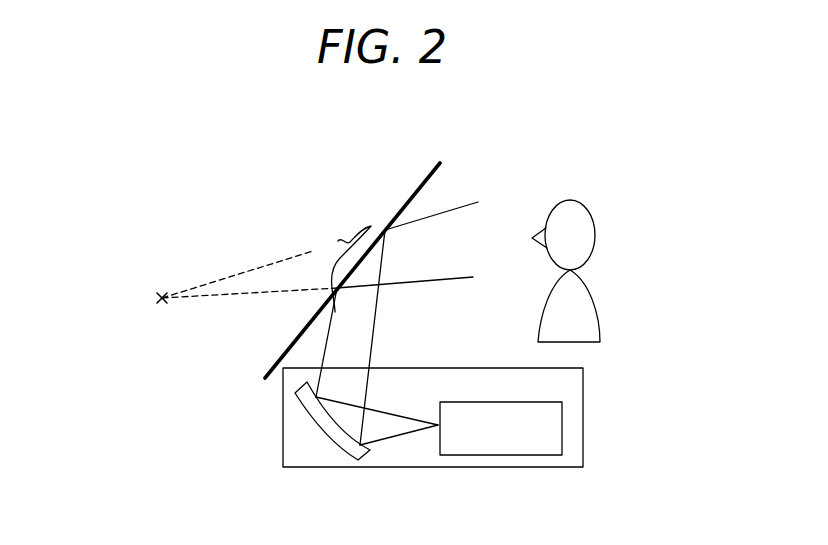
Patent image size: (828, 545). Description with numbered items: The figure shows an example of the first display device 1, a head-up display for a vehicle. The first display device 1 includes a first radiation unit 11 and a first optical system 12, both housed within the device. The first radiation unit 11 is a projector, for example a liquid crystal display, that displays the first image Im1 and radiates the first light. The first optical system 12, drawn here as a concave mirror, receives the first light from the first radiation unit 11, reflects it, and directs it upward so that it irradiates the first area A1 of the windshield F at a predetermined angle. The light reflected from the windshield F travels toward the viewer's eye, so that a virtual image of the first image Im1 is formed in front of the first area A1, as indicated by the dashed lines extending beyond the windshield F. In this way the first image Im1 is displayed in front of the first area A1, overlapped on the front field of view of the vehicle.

The first display device 1 is at (520, 467).
The first radiation unit 11 is at (510, 402).
The first optical system 12 is at (338, 442).
The windshield F is at (431, 173).
The first area A1 is at (342, 269).
The first image Im1 is at (141, 284).